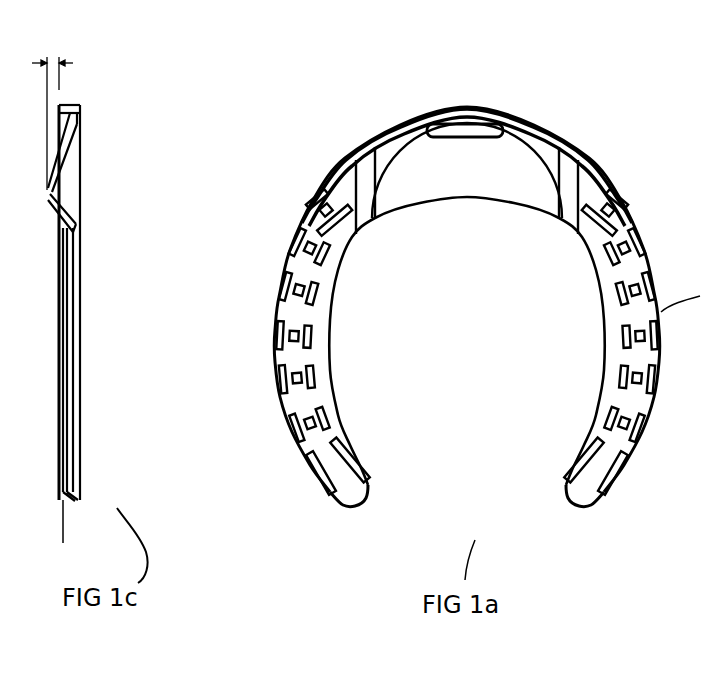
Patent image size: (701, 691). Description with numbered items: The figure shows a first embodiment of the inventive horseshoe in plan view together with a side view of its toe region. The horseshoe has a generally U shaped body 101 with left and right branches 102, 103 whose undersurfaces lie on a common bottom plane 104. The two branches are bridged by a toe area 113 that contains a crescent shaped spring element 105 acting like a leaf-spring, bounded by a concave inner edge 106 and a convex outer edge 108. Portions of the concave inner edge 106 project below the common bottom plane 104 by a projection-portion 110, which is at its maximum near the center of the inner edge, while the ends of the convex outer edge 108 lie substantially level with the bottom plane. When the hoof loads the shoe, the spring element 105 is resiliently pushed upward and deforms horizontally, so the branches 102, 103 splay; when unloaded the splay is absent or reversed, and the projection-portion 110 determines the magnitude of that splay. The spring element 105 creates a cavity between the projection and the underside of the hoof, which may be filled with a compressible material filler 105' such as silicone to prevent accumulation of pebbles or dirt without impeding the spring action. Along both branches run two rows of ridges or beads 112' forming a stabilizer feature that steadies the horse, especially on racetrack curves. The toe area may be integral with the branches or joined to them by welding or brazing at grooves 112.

In FIG. 1A, the U shaped body 101 is at (621, 210).
In FIG. 1A, the left branch 102 is at (322, 488).
In FIG. 1A, the right branch 103 is at (601, 500).
In FIG. 1C, the common bottom plane 104 is at (66, 537).
In FIG. 1A, the crescent shaped spring element 105 is at (485, 156).
In FIG. 1C, the compressible material filler 105' is at (104, 212).
In FIG. 1C, the concave inner edge 106 is at (50, 188).
In FIG. 1A, the concave inner edge 106 is at (470, 200).
In FIG. 1A, the convex outer edge 108 is at (401, 130).
In FIG. 1C, the projection-portion 110 is at (53, 67).
In FIG. 1A, the grooves 112 is at (467, 183).
In FIG. 1A, the ridges or beads 112' is at (444, 313).
In FIG. 1A, the toe area 113 is at (474, 107).